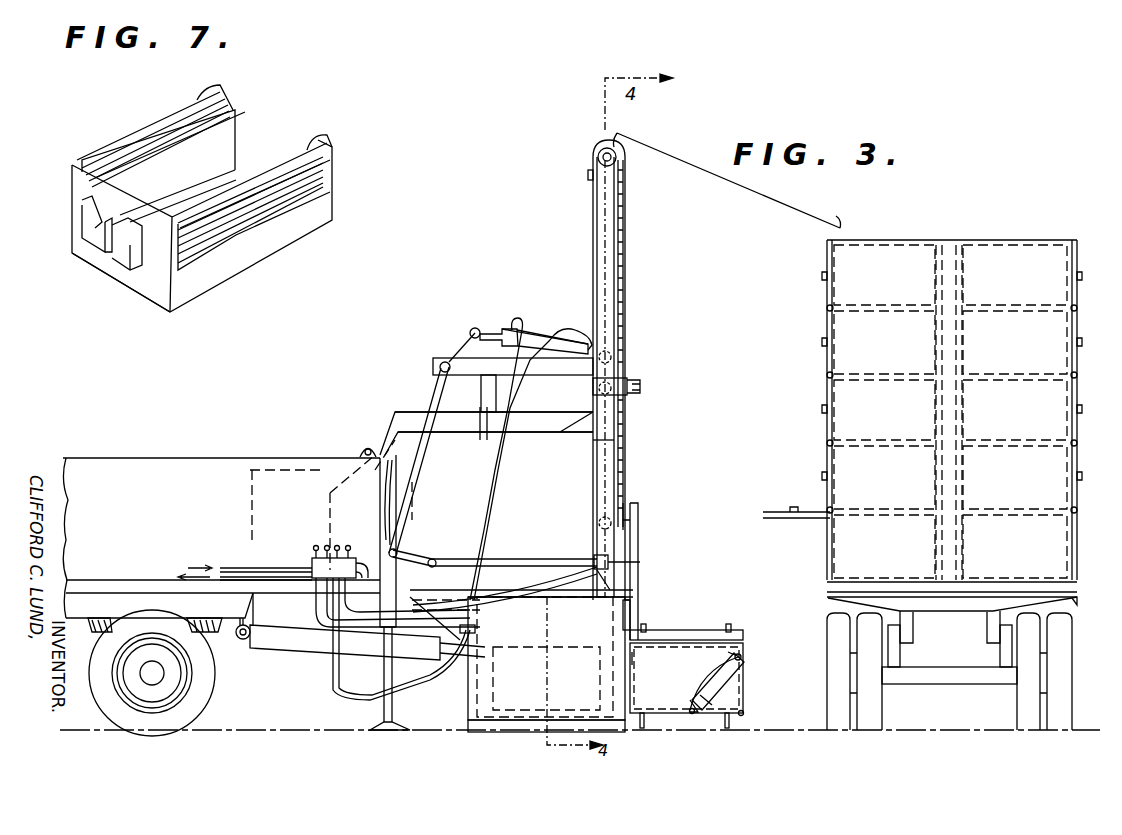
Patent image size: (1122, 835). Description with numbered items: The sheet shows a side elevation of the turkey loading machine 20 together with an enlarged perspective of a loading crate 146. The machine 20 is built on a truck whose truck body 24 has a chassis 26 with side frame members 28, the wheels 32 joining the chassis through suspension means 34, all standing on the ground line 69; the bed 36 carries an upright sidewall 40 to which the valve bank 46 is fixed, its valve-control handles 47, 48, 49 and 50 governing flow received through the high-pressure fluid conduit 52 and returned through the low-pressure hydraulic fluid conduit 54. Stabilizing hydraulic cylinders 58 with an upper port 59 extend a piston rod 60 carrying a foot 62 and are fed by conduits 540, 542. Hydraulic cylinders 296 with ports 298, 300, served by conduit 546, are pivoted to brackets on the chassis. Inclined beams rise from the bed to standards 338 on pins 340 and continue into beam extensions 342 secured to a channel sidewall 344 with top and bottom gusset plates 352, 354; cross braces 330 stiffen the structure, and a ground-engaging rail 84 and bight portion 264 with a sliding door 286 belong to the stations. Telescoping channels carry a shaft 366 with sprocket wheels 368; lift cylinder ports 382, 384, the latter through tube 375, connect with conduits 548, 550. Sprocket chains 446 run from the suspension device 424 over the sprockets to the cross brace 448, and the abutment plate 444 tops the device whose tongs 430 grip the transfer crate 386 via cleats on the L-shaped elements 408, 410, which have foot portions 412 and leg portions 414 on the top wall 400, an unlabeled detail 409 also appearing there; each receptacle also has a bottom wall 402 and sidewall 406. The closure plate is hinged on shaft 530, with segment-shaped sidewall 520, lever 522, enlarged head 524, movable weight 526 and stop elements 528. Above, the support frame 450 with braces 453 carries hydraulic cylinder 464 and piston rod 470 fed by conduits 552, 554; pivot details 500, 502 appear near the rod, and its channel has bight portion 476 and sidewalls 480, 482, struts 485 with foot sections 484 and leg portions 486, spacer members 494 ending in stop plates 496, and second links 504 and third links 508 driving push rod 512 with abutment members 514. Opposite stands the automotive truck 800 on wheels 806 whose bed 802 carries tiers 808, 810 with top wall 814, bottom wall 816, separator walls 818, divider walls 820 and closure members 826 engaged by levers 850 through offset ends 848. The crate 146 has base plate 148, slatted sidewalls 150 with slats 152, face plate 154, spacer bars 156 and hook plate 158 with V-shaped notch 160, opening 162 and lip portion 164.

In FIG. 7, the loading crate 146 is at (141, 128).
In FIG. 7, the base plate 148 is at (240, 165).
In FIG. 7, the sidewalls 150 is at (230, 142).
In FIG. 7, the slats 152 is at (232, 112).
In FIG. 7, the face plate 154 is at (152, 300).
In FIG. 7, the spacer bars 156 is at (122, 222).
In FIG. 7, the hook plate 158 is at (120, 250).
In FIG. 7, the V-shaped notch 160 is at (85, 222).
In FIG. 7, the opening 162 is at (108, 240).
In FIG. 7, the lip portion 164 is at (135, 262).
In FIG. 3, the turkey loading machine 20 is at (533, 252).
In FIG. 3, the truck body 24 is at (205, 456).
In FIG. 3, the chassis 26 is at (82, 626).
In FIG. 3, the side frame members 28 is at (108, 580).
In FIG. 3, the wheels 32 is at (104, 690).
In FIG. 3, the suspension means 34 is at (96, 634).
In FIG. 3, the bed 36 is at (135, 580).
In FIG. 3, the sidewall 40 is at (290, 458).
In FIG. 3, the valve bank 46 is at (300, 565).
In FIG. 3, the valve-control handle 47 is at (316, 546).
In FIG. 3, the valve-control handle 48 is at (327, 546).
In FIG. 3, the valve-control handle 49 is at (337, 546).
In FIG. 3, the valve-control handle 50 is at (348, 546).
In FIG. 3, the high-pressure fluid conduit 52 is at (232, 568).
In FIG. 3, the low-pressure hydraulic fluid conduit 54 is at (230, 578).
In FIG. 3, the hydraulic cylinders 58 is at (405, 586).
In FIG. 3, the upper port 59 is at (395, 462).
In FIG. 3, the piston rod 60 is at (394, 712).
In FIG. 3, the foot 62 is at (405, 728).
In FIG. 3, the ground line 69 is at (288, 728).
In FIG. 3, the ground-engaging rail 84 is at (827, 593).
In FIG. 3, the bight portion 264 is at (612, 618).
In FIG. 3, the sliding door 286 is at (625, 692).
In FIG. 3, the hydraulic cylinders 296 is at (345, 655).
In FIG. 3, the port 298 is at (265, 640).
In FIG. 3, the port 300 is at (458, 640).
In FIG. 3, the cross braces 330 is at (318, 502).
In FIG. 3, the standards 338 is at (368, 442).
In FIG. 3, the pins 340 is at (364, 450).
In FIG. 3, the beam extensions 342 is at (548, 414).
In FIG. 3, the sidewall 344 is at (310, 632).
In FIG. 3, the top gusset plate 352 is at (585, 402).
In FIG. 3, the bottom gusset plate 354 is at (575, 468).
In FIG. 3, the shaft 366 is at (597, 157).
In FIG. 3, the sprocket wheels 368 is at (600, 150).
In FIG. 3, the tube 375 is at (590, 488).
In FIG. 3, the port 382 is at (600, 580).
In FIG. 3, the port 384 is at (595, 552).
In FIG. 3, the transfer crate 386 is at (755, 655).
In FIG. 3, the top wall 400 is at (680, 648).
In FIG. 3, the bottom wall 402 is at (678, 715).
In FIG. 3, the sidewall 406 is at (660, 715).
In FIG. 3, the L-shaped element 408 is at (647, 625).
In FIG. 3, the pin 409 is at (655, 630).
In FIG. 3, the L-shaped element 410 is at (728, 610).
In FIG. 3, the foot portions 412 is at (735, 650).
In FIG. 3, the leg portions 414 is at (735, 625).
In FIG. 3, the suspension device 424 is at (655, 566).
In FIG. 3, the tongs 430 is at (690, 630).
In FIG. 3, the abutment plate 444 is at (630, 503).
In FIG. 3, the sprocket chains 446 is at (626, 310).
In FIG. 3, the cross brace 448 is at (590, 185).
In FIG. 3, the support frame 450 is at (443, 344).
In FIG. 3, the braces 453 is at (462, 374).
In FIG. 3, the hydraulic cylinder 464 is at (548, 318).
In FIG. 3, the piston rod 470 is at (508, 328).
In FIG. 3, the bight portion 476 is at (641, 387).
In FIG. 3, the sidewall 480 is at (638, 382).
In FIG. 3, the sidewall 482 is at (636, 395).
In FIG. 3, the foot sections 484 is at (620, 378).
In FIG. 3, the struts 485 is at (593, 464).
In FIG. 3, the leg portions 486 is at (593, 504).
In FIG. 3, the spacer members 494 is at (480, 440).
In FIG. 3, the stop plates 496 is at (490, 437).
In FIG. 3, the pivot 500 is at (462, 325).
In FIG. 3, the link 502 is at (480, 320).
In FIG. 3, the second links 504 is at (410, 524).
In FIG. 3, the third links 508 is at (415, 553).
In FIG. 3, the push rod 512 is at (495, 558).
In FIG. 3, the abutment members 514 is at (632, 555).
In FIG. 3, the segment-shaped sidewall 520 is at (715, 668).
In FIG. 3, the lever 522 is at (710, 690).
In FIG. 3, the enlarged head 524 is at (694, 714).
In FIG. 3, the movable weight 526 is at (705, 705).
In FIG. 3, the stop elements 528 is at (742, 652).
In FIG. 3, the shaft 530 is at (744, 712).
In FIG. 3, the conduit 540 is at (392, 478).
In FIG. 3, the conduit 542 is at (330, 660).
In FIG. 3, the conduit 546 is at (440, 650).
In FIG. 3, the conduit 548 is at (560, 578).
In FIG. 3, the conduit 550 is at (524, 583).
In FIG. 3, the conduit 552 is at (527, 335).
In FIG. 3, the conduit 554 is at (560, 339).
In FIG. 3, the automotive truck 800 is at (1085, 574).
In FIG. 3, the bed 802 is at (1070, 590).
In FIG. 3, the wheels 806 is at (1060, 655).
In FIG. 3, the tier of transport crates 808 is at (921, 234).
In FIG. 3, the tier of transport crates 810 is at (1016, 234).
In FIG. 3, the top wall 814 is at (875, 242).
In FIG. 3, the bottom wall 816 is at (891, 577).
In FIG. 3, the separator walls 818 is at (950, 242).
In FIG. 3, the divider walls 820 is at (900, 421).
In FIG. 3, the closure member 826 is at (770, 512).
In FIG. 3, the offset ends 848 is at (827, 443).
In FIG. 3, the levers 850 is at (824, 390).